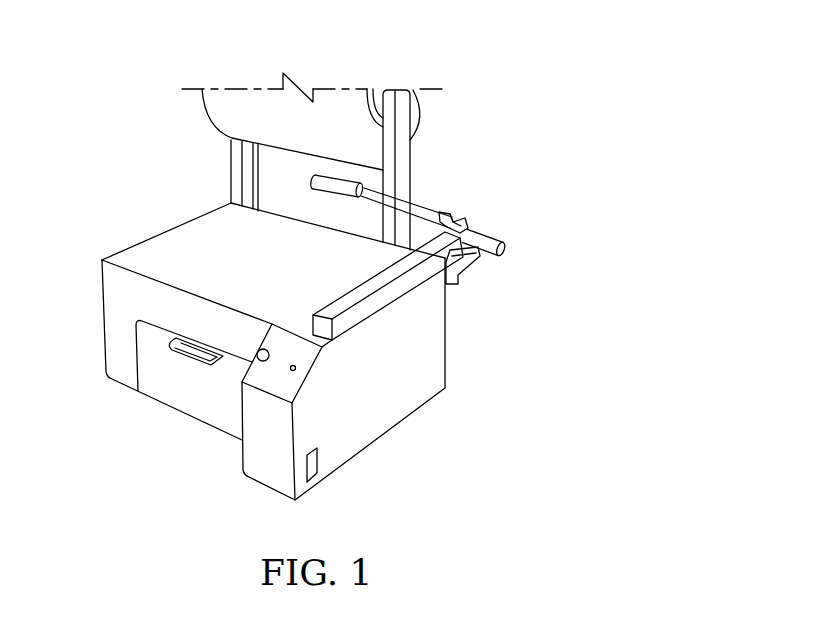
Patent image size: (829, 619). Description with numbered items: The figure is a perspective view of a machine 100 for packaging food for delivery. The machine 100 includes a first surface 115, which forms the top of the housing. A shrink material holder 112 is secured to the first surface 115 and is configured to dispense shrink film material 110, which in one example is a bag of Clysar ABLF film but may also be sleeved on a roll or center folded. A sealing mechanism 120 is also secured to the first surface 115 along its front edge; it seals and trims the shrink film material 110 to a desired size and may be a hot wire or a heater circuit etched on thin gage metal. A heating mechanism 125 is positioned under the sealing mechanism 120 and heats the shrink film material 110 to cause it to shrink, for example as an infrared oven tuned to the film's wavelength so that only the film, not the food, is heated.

The machine 100 is at (145, 170).
The shrink film material 110 is at (415, 102).
The shrink material holder 112 is at (407, 165).
The first surface 115 is at (147, 258).
The sealing mechanism 120 is at (410, 293).
The heating mechanism 125 is at (152, 435).